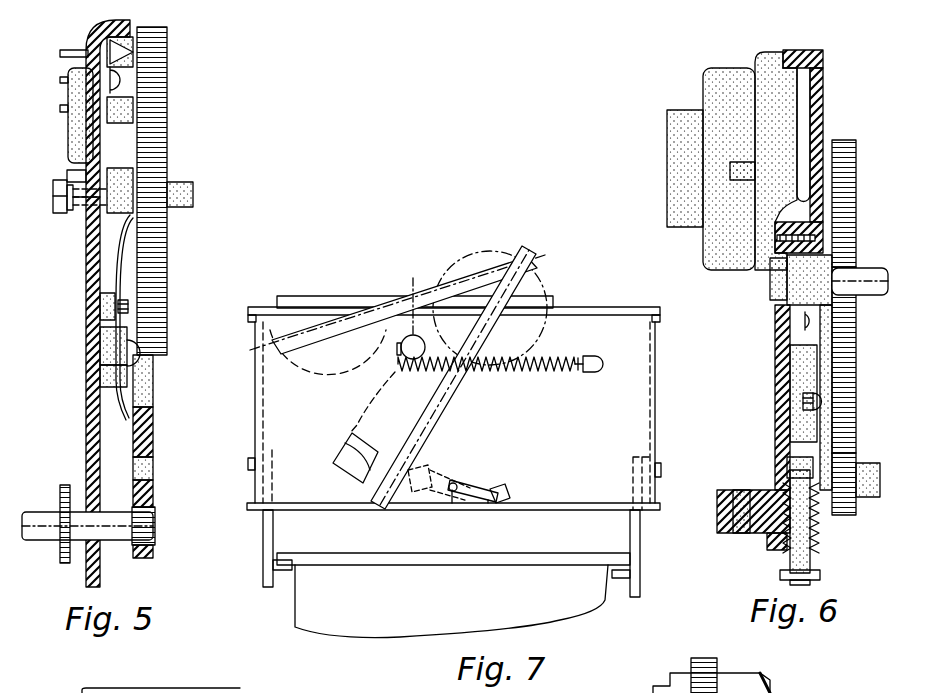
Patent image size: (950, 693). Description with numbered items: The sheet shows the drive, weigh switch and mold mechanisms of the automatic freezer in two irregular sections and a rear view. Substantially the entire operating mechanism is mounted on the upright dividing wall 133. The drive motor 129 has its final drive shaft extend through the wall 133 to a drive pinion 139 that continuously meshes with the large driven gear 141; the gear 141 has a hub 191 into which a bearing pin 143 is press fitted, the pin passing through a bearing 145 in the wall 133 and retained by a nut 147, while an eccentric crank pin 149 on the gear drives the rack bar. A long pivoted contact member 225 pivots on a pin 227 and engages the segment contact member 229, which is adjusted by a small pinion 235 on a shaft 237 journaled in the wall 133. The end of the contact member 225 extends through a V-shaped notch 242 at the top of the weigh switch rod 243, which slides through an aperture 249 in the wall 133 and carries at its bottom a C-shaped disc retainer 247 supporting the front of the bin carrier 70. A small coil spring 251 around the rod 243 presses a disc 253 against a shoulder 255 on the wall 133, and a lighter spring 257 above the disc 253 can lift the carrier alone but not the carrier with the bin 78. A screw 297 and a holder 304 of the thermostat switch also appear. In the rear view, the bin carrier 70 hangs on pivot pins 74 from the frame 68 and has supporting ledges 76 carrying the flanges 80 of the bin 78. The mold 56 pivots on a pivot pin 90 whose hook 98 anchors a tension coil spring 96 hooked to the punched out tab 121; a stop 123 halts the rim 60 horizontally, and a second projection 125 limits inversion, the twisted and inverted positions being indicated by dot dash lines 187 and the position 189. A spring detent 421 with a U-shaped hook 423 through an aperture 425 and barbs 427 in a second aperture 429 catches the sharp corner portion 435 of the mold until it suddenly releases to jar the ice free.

In FIG. 5, the upright dividing wall 133 is at (88, 430).
In FIG. 6, the upright dividing wall 133 is at (787, 347).
In FIG. 5, the large driven gear 141 is at (150, 50).
In FIG. 6, the large driven gear 141 is at (842, 348).
In FIG. 5, the bearing 145 is at (100, 244).
In FIG. 5, the nut 147 is at (62, 183).
In FIG. 5, the bearing pin 143 is at (78, 207).
In FIG. 5, the hub 191 is at (125, 180).
In FIG. 5, the crank pin 149 is at (195, 206).
In FIG. 6, the crank pin 149 is at (860, 492).
In FIG. 5, the pivoted contact member 225 is at (113, 280).
In FIG. 6, the pivoted contact member 225 is at (820, 401).
In FIG. 5, the pin 227 is at (100, 333).
In FIG. 5, the V-shaped notch 242 is at (100, 362).
In FIG. 6, the V-shaped notch 242 is at (799, 406).
In FIG. 5, the segment contact member 229 is at (140, 480).
In FIG. 5, the shaft 237 is at (43, 528).
In FIG. 5, the small pinion 235 is at (147, 538).
In FIG. 7, the frame 68 is at (255, 418).
In FIG. 7, the rim 60 is at (290, 297).
In FIG. 7, the pivot pins 74 is at (250, 470).
In FIG. 7, the bin carrier 70 is at (262, 552).
In FIG. 7, the laterally extending flanges 80 is at (397, 560).
In FIG. 7, the supporting ledges 76 is at (620, 567).
In FIG. 7, the bin 78 is at (365, 607).
In FIG. 7, the stop 123 is at (270, 340).
In FIG. 7, the dot dash lines 187 is at (462, 285).
In FIG. 7, the mold 56 is at (377, 300).
In FIG. 7, the dot and dash line position 189 is at (443, 400).
In FIG. 7, the pivot pin 90 is at (413, 308).
In FIG. 7, the hook 98 is at (396, 350).
In FIG. 7, the tension type coil spring 96 is at (520, 374).
In FIG. 7, the punched out tab 121 is at (588, 376).
In FIG. 7, the second projection 125 is at (368, 478).
In FIG. 7, the spring detent 421 is at (430, 485).
In FIG. 7, the sharp corner portion 435 is at (380, 506).
In FIG. 7, the barbs 427 is at (468, 482).
In FIG. 7, the aperture 425 is at (510, 492).
In FIG. 7, the second aperture 429 is at (452, 503).
In FIG. 7, the U-shaped hook 423 is at (488, 502).
In FIG. 6, the drive motor 129 is at (707, 79).
In FIG. 6, the screw 297 is at (772, 260).
In FIG. 6, the drive pinion 139 is at (842, 140).
In FIG. 6, the light coil spring 257 is at (840, 457).
In FIG. 6, the holder 304 is at (797, 283).
In FIG. 6, the disc 253 is at (787, 463).
In FIG. 6, the shoulder 255 is at (773, 475).
In FIG. 6, the small coil spring 251 is at (780, 527).
In FIG. 6, the weigh switch rod 243 is at (810, 560).
In FIG. 6, the aperture 249 is at (815, 543).
In FIG. 6, the C-shaped disc retainer 247 is at (783, 572).